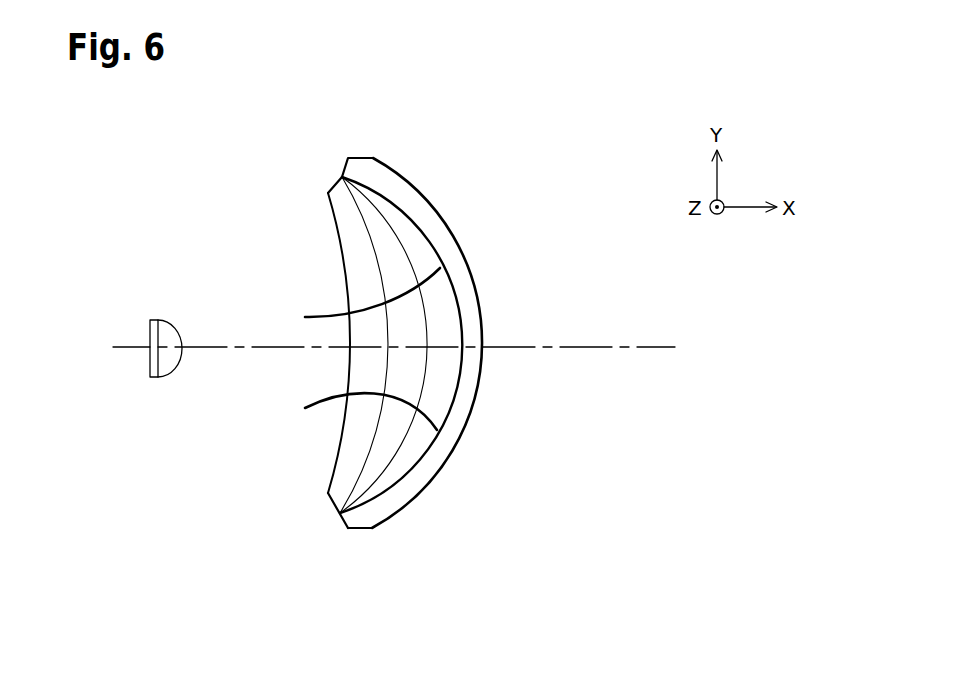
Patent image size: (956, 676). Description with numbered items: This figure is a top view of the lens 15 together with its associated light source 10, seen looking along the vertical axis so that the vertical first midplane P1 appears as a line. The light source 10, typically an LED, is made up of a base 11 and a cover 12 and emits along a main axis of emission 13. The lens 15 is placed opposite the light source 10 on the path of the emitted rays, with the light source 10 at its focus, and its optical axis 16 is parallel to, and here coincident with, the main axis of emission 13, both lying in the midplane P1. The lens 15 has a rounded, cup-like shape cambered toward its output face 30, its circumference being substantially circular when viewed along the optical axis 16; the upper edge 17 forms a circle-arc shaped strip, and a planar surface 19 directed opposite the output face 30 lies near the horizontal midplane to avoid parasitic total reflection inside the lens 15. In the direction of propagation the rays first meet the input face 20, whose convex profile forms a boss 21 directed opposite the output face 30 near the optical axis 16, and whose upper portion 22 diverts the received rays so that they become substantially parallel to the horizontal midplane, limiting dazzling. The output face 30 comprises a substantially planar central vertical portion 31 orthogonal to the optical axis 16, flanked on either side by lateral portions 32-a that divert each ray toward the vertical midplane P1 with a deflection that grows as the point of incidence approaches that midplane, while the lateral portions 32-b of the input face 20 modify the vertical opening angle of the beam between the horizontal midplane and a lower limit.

The light source 10 is at (146, 361).
The base 11 is at (153, 338).
The cover 12 is at (167, 338).
The main axis of emission 13 is at (394, 393).
The lens 15 is at (400, 377).
The optical axis 16 is at (394, 393).
The upper edge 17 is at (383, 498).
The planar surface 19 is at (335, 527).
The input face 20 is at (380, 208).
The boss 21 is at (343, 441).
The upper portion 22 is at (395, 283).
The output face 30 is at (445, 320).
The central vertical portion 31 is at (483, 333).
The lateral portion 32-a is at (458, 258).
The lateral portion 32-b is at (346, 349).
The vertical first midplane P1 is at (599, 348).